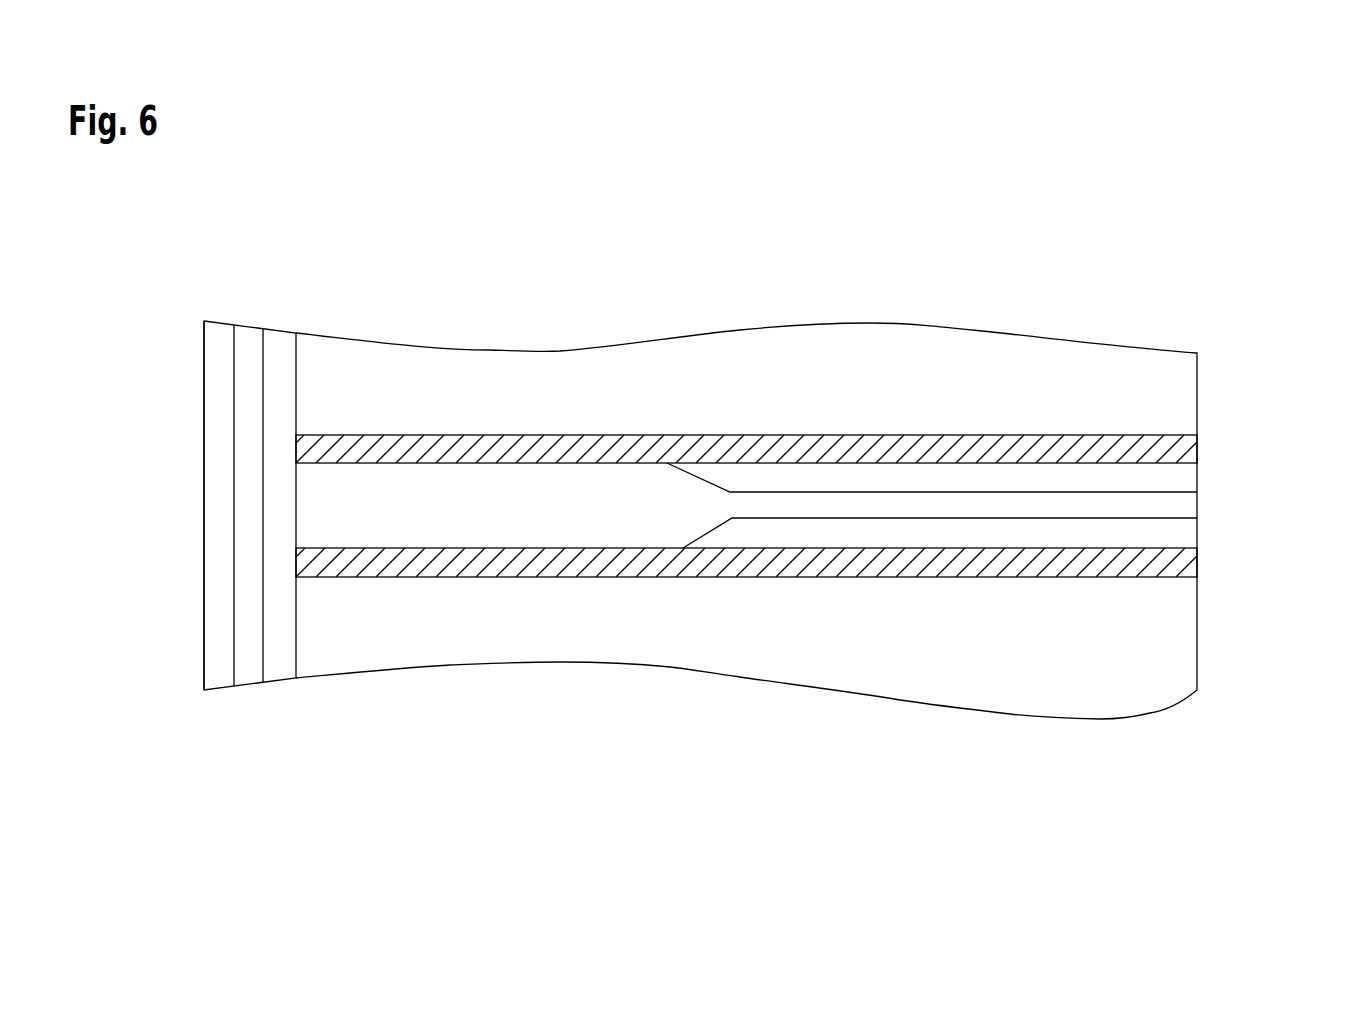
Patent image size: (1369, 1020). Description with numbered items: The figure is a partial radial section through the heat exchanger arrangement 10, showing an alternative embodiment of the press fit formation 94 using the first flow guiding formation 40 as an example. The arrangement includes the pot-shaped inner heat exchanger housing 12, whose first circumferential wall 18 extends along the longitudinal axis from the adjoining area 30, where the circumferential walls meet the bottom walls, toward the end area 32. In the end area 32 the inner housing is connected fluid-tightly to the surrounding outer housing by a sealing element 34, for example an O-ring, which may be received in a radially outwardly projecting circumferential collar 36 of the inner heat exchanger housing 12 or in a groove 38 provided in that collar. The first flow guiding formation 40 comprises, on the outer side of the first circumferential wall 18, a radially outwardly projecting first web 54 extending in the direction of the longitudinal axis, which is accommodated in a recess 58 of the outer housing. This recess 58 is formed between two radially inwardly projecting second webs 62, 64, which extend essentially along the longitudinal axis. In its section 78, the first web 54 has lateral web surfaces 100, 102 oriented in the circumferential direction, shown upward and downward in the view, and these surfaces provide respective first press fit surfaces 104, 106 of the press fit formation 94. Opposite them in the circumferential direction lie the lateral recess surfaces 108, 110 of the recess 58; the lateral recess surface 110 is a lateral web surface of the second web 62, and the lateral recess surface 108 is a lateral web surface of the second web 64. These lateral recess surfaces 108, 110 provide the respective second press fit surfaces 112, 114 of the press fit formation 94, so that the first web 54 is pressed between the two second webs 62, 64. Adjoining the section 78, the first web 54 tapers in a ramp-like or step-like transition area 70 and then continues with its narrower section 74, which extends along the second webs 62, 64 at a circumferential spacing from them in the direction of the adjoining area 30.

The heat exchanger arrangement 10 is at (933, 155).
The inner heat exchanger housing 12 is at (1142, 718).
The first circumferential wall 18 is at (1013, 670).
The adjoining area 30 is at (1225, 280).
The end area 32 is at (183, 290).
The sealing element 34 is at (245, 418).
The circumferential collar 36 is at (204, 622).
The groove 38 is at (233, 356).
The first flow guiding formation 40 is at (1240, 455).
The first web 54 is at (750, 488).
The recess 58 is at (1180, 483).
The second web 62 is at (1168, 569).
The second web 64 is at (1143, 435).
The transition area 70 is at (712, 383).
The section 74 is at (952, 490).
The section 78 is at (512, 605).
The press fit formation 94 is at (348, 388).
The lateral web surface 100 is at (425, 462).
The lateral web surface 102 is at (428, 552).
The first press fit surface 104 is at (320, 460).
The first press fit surface 106 is at (350, 552).
The lateral recess surface 108 is at (558, 465).
The lateral recess surface 110 is at (487, 547).
The second press fit surface 112 is at (665, 465).
The second press fit surface 114 is at (609, 546).